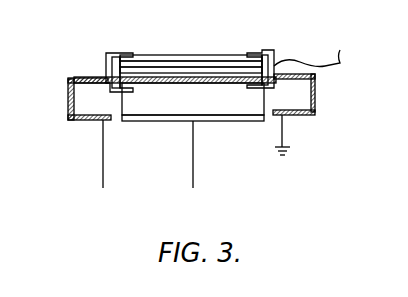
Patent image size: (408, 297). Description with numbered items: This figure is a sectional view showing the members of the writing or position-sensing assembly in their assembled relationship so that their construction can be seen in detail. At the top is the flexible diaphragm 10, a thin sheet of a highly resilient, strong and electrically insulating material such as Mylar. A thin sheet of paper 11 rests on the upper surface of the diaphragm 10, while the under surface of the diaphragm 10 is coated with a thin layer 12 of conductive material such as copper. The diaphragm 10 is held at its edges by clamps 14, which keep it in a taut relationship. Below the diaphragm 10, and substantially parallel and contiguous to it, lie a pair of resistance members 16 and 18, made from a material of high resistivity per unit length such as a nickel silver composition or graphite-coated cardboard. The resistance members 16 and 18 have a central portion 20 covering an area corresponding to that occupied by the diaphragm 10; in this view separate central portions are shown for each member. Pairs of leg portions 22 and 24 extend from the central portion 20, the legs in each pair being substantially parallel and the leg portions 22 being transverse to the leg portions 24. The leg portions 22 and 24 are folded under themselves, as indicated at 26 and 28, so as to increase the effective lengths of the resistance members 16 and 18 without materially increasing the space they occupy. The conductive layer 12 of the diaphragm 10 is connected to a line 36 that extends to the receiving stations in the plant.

The flexible diaphragm 10 is at (193, 64).
The sheet of paper 11 is at (153, 56).
The layer of conductive material 12 is at (236, 70).
The clamps 14 is at (106, 66).
The resistance member 16 is at (62, 118).
The resistance member 18 is at (157, 125).
The central portion 20 is at (171, 85).
The leg portions 22 is at (78, 80).
The leg portions 24 is at (247, 114).
The folded-under portion 26 is at (87, 121).
The folded-under portion 28 is at (220, 119).
The line 36 is at (313, 50).